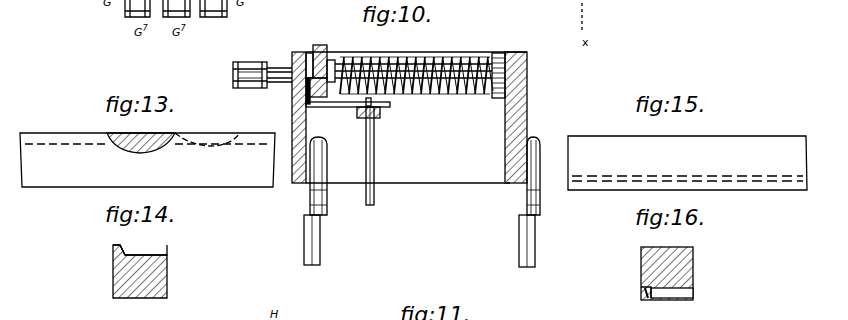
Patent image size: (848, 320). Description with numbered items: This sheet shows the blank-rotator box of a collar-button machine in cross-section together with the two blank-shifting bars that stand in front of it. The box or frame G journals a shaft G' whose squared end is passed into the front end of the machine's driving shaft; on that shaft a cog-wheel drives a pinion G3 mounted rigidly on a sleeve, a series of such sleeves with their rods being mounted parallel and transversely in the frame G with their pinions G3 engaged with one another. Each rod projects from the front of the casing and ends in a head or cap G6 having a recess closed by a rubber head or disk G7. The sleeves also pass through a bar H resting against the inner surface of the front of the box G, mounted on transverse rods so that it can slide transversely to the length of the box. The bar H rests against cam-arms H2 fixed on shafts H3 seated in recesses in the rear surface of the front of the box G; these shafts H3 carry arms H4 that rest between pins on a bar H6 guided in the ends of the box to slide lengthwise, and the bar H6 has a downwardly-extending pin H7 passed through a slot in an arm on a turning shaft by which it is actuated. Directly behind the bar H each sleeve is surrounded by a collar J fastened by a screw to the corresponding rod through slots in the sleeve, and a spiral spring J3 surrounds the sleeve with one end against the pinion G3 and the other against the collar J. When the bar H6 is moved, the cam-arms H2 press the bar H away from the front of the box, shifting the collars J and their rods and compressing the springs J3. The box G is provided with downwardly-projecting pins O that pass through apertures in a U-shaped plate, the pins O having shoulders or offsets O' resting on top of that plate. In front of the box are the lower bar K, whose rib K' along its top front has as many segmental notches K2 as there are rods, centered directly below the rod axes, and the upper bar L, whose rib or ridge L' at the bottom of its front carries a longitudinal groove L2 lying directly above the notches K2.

In FIG. 10, the box or frame G is at (291, 117).
In FIG. 10, the shaft G' is at (279, 86).
In FIG. 10, the pinion G3 is at (497, 98).
In FIG. 10, the head or cap G6 is at (250, 65).
In FIG. 10, the rubber head or disk G7 is at (214, 65).
In FIG. 10, the bar H is at (317, 60).
In FIG. 10, the cam-arms H2 is at (308, 48).
In FIG. 10, the shafts H3 is at (310, 105).
In FIG. 10, the arms H4 is at (390, 104).
In FIG. 10, the bar H6 is at (375, 118).
In FIG. 10, the downwardly-extending pin H7 is at (374, 160).
In FIG. 10, the collar J is at (336, 58).
In FIG. 10, the spiral spring J3 is at (445, 58).
In FIG. 10, the downwardly-projecting pins O is at (428, 241).
In FIG. 10, the shoulders or offsets O' is at (415, 176).
In FIG. 13, the lower bar K is at (147, 160).
In FIG. 14, the lower bar K is at (149, 271).
In FIG. 13, the rib K' is at (207, 129).
In FIG. 14, the rib K' is at (102, 247).
In FIG. 13, the segmental notches K2 is at (145, 133).
In FIG. 14, the segmental notches K2 is at (124, 245).
In FIG. 15, the upper bar L is at (687, 163).
In FIG. 16, the upper bar L is at (676, 273).
In FIG. 16, the rib or ridge L' is at (631, 289).
In FIG. 16, the longitudinal groove L2 is at (646, 300).